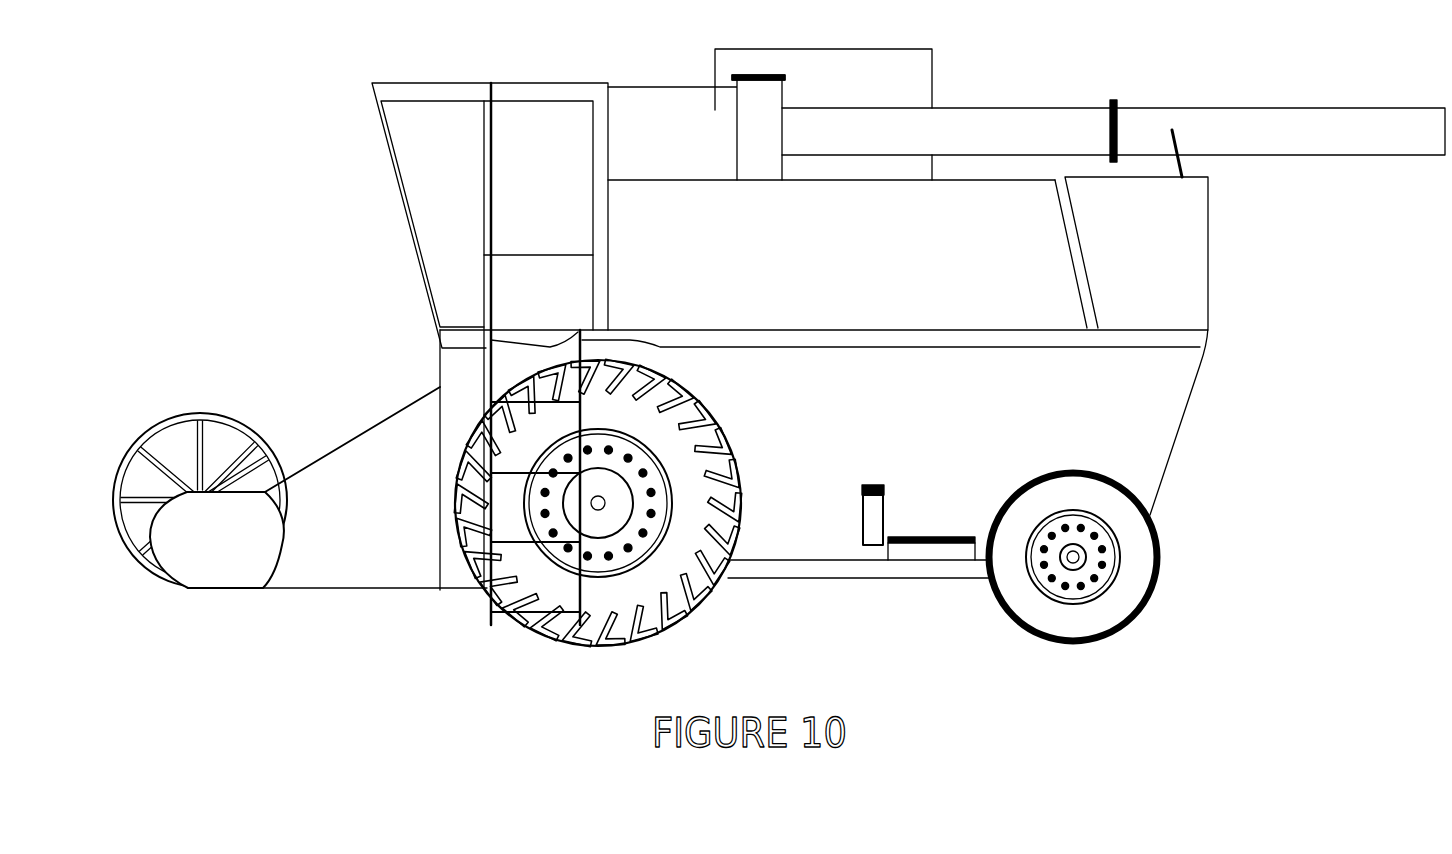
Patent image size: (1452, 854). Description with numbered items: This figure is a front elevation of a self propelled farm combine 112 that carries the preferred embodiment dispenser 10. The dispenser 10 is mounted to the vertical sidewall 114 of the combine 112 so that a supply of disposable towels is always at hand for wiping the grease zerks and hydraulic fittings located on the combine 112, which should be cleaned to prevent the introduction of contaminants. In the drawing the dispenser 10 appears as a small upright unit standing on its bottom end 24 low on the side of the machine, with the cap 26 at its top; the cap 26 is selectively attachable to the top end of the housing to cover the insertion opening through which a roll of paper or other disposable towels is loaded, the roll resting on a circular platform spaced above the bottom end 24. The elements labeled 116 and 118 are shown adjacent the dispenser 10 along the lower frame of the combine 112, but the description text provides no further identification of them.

The vertical sidewall 114 is at (890, 432).
The self propelled farm combine 112 is at (1205, 408).
The mounting bracket 116 is at (933, 553).
The frame member 118 is at (890, 572).
The dispenser 10 is at (870, 515).
The bottom end 24 is at (877, 547).
The cap 26 is at (875, 490).